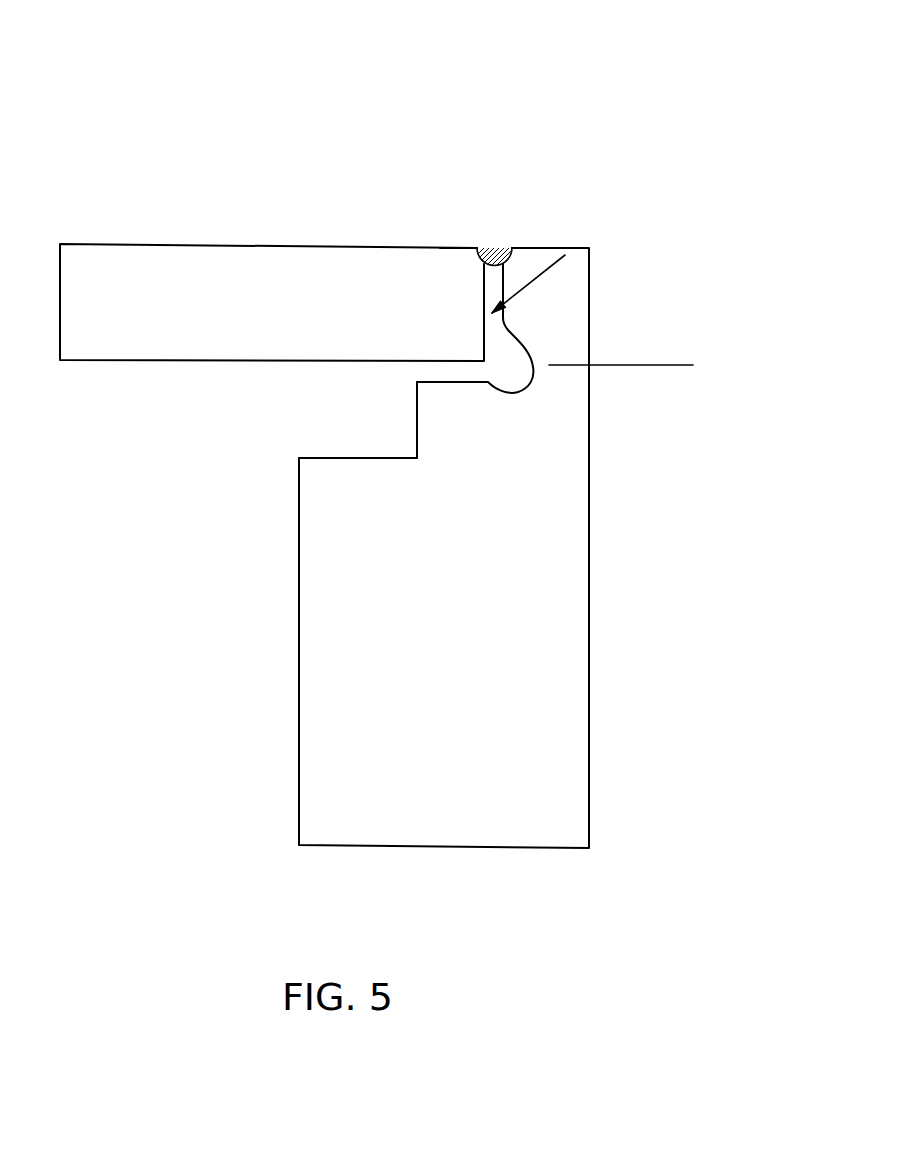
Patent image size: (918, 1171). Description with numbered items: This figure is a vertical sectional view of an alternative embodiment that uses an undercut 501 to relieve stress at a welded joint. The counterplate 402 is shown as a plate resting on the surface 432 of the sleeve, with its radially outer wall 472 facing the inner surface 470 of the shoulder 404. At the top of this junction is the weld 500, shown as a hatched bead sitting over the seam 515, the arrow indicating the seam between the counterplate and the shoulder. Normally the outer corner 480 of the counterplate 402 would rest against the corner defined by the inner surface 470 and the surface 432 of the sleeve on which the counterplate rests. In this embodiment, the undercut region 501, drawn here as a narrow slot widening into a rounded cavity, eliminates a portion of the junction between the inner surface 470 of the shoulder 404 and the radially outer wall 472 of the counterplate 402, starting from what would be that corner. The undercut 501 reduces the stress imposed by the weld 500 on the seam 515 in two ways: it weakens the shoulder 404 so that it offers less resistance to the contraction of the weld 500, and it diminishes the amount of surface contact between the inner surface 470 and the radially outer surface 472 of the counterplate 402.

The counterplate 402 is at (215, 262).
The shoulder 404 is at (585, 308).
The weld 500 is at (497, 251).
The radially outer wall of counterplate 472 is at (448, 261).
The inner surface of shoulder 470 is at (533, 262).
The seam 515 is at (565, 255).
The outer corner of counterplate 480 is at (482, 358).
The undercut 501 is at (632, 365).
The surface of sleeve 432 is at (450, 383).